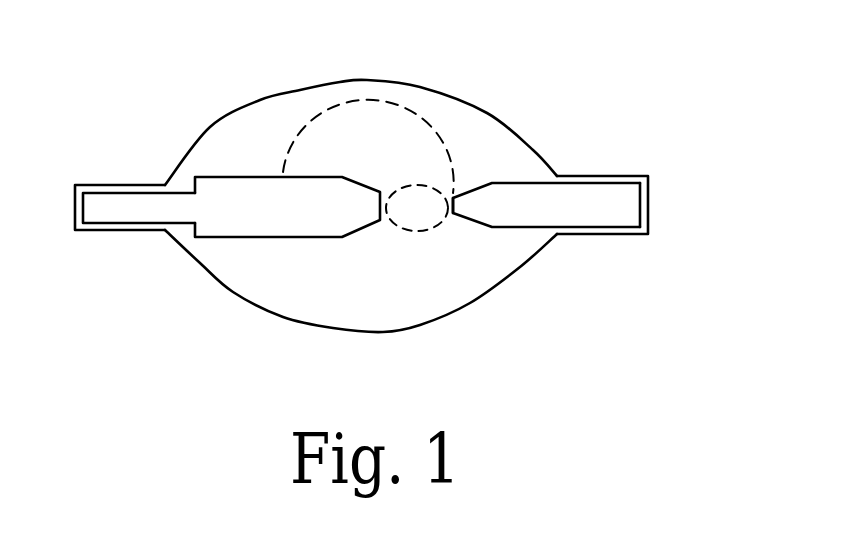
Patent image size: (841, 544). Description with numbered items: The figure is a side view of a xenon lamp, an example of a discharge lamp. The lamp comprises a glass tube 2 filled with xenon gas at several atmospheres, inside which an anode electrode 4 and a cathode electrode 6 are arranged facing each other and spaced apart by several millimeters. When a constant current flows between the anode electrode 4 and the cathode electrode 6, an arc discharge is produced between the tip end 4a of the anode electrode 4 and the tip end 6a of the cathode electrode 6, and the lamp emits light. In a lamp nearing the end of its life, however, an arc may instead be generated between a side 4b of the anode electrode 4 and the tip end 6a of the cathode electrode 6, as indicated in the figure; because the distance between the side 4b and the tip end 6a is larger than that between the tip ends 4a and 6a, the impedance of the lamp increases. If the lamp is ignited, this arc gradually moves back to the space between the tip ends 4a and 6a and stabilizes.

The glass tube 2 is at (465, 125).
The anode electrode 4 is at (243, 207).
The tip end of the anode electrode 4a is at (383, 198).
The side of the anode electrode 4b is at (280, 177).
The cathode electrode 6 is at (593, 207).
The tip end of the cathode electrode 6a is at (460, 207).